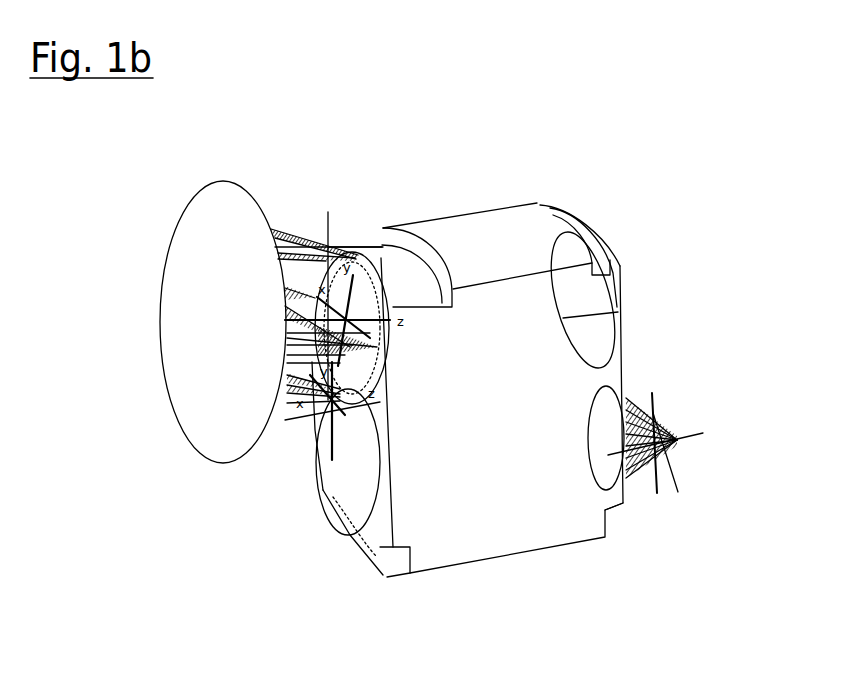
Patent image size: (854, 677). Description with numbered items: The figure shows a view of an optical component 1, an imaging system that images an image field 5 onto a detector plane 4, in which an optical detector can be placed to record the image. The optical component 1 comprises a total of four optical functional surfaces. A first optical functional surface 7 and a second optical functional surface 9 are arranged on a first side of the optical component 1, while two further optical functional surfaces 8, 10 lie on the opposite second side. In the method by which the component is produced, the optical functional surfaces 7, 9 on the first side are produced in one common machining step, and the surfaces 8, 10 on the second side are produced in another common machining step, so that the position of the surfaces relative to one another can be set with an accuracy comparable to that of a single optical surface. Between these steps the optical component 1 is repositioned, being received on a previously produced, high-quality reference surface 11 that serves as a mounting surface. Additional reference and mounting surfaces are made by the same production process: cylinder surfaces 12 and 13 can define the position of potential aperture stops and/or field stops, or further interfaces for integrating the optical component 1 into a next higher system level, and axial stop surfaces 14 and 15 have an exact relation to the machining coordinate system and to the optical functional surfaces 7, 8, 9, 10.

The optical component 1 is at (533, 230).
The detector plane 4 is at (685, 432).
The image field 5 is at (162, 270).
The first optical functional surface 7 is at (328, 212).
The optical functional surface 8 is at (568, 318).
The second optical functional surface 9 is at (323, 490).
The optical functional surface 10 is at (610, 505).
The reference surface 11 is at (463, 215).
The cylinder surface 12 is at (382, 245).
The cylinder surface 13 is at (570, 215).
The axial stop surface 14 is at (390, 562).
The axial stop surface 15 is at (606, 512).